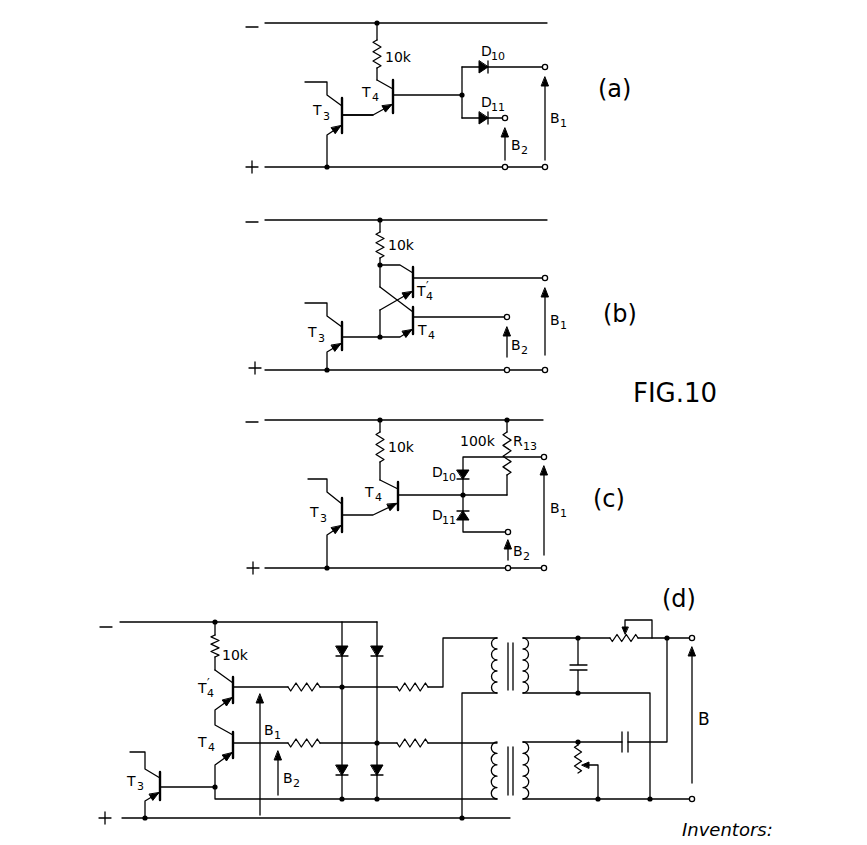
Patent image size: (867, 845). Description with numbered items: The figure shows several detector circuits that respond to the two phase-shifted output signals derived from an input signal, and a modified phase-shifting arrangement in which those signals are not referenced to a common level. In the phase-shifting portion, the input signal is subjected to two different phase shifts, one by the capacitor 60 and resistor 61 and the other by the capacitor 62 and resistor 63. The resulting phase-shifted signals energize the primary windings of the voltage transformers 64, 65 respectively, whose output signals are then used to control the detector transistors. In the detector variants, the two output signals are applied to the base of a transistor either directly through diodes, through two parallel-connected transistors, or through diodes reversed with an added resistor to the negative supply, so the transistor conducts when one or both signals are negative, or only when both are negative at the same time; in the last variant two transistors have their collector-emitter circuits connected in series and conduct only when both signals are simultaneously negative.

The capacitor 60 is at (613, 677).
The resistor 61 is at (634, 659).
The capacitor 62 is at (637, 769).
The resistor 63 is at (572, 771).
The voltage transformer 64 is at (490, 672).
The voltage transformer 65 is at (490, 779).